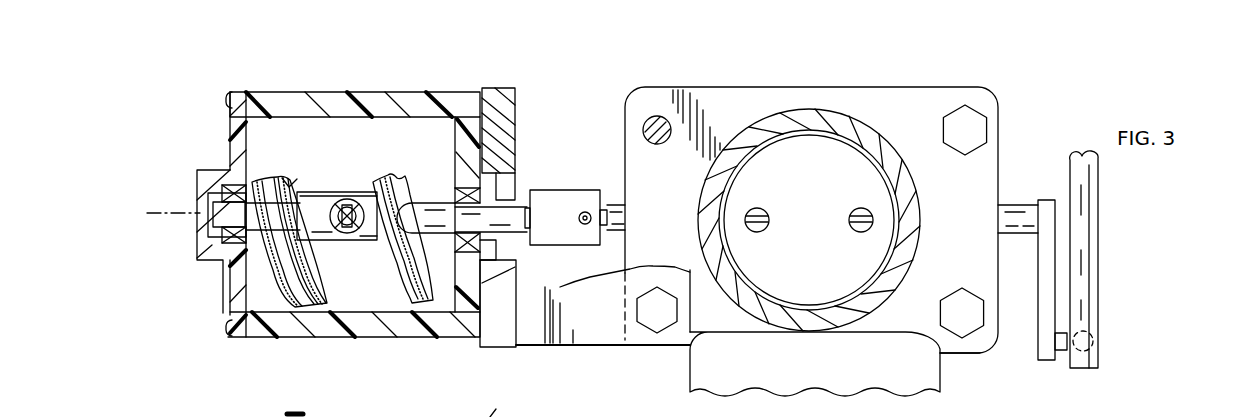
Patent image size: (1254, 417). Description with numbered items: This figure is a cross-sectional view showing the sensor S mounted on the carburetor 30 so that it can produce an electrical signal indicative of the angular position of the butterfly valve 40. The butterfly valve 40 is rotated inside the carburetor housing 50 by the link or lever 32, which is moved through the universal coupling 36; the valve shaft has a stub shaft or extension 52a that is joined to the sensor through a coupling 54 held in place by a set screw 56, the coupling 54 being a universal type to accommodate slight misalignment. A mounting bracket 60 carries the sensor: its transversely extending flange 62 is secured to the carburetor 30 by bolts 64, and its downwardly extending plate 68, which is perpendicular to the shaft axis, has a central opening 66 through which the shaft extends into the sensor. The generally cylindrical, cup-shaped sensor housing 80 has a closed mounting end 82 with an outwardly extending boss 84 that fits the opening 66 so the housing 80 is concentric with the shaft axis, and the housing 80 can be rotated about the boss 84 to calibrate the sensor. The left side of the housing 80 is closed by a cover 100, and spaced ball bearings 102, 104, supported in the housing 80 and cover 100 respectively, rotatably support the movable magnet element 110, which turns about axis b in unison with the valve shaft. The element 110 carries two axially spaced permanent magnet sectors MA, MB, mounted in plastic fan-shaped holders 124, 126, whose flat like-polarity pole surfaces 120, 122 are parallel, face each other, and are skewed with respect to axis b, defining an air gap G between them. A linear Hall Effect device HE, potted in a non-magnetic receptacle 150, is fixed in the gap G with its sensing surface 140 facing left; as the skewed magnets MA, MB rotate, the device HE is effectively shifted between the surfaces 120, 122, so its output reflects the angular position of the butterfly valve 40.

The carburetor 30 is at (1000, 137).
The link or lever 32 is at (1043, 318).
The universal coupling 36 is at (1067, 350).
The butterfly valve 40 is at (848, 163).
The carburetor housing 50 is at (982, 353).
The stub shaft or extension 52a is at (620, 215).
The coupling 54 is at (567, 237).
The set screw 56 is at (586, 211).
The mounting bracket 60 is at (575, 338).
The transversely extending flange 62 is at (607, 337).
The bolts 64 is at (657, 320).
The central opening 66 is at (515, 172).
The downwardly extending plate 68 is at (517, 108).
The sensor housing 80 is at (336, 90).
The closed mounting end 82 is at (490, 292).
The outwardly extending boss 84 is at (483, 248).
The cover 100 is at (228, 140).
The ball bearing 102 is at (455, 193).
The ball bearing 104 is at (227, 168).
The movable magnet element 110 is at (342, 188).
The magnetic pole surface 120 is at (297, 255).
The magnetic pole surface 122 is at (406, 286).
The fan-shaped holder 124 is at (282, 300).
The fan-shaped holder 126 is at (440, 286).
The sensing surface 140 is at (342, 230).
The non-magnetic receptacle 150 is at (430, 199).
The air gap G is at (312, 187).
The Hall Effect device HE is at (361, 205).
The permanent magnet sector MA is at (305, 378).
The permanent magnet sector MB is at (407, 360).
The sensor S is at (435, 90).
The axis b is at (162, 213).